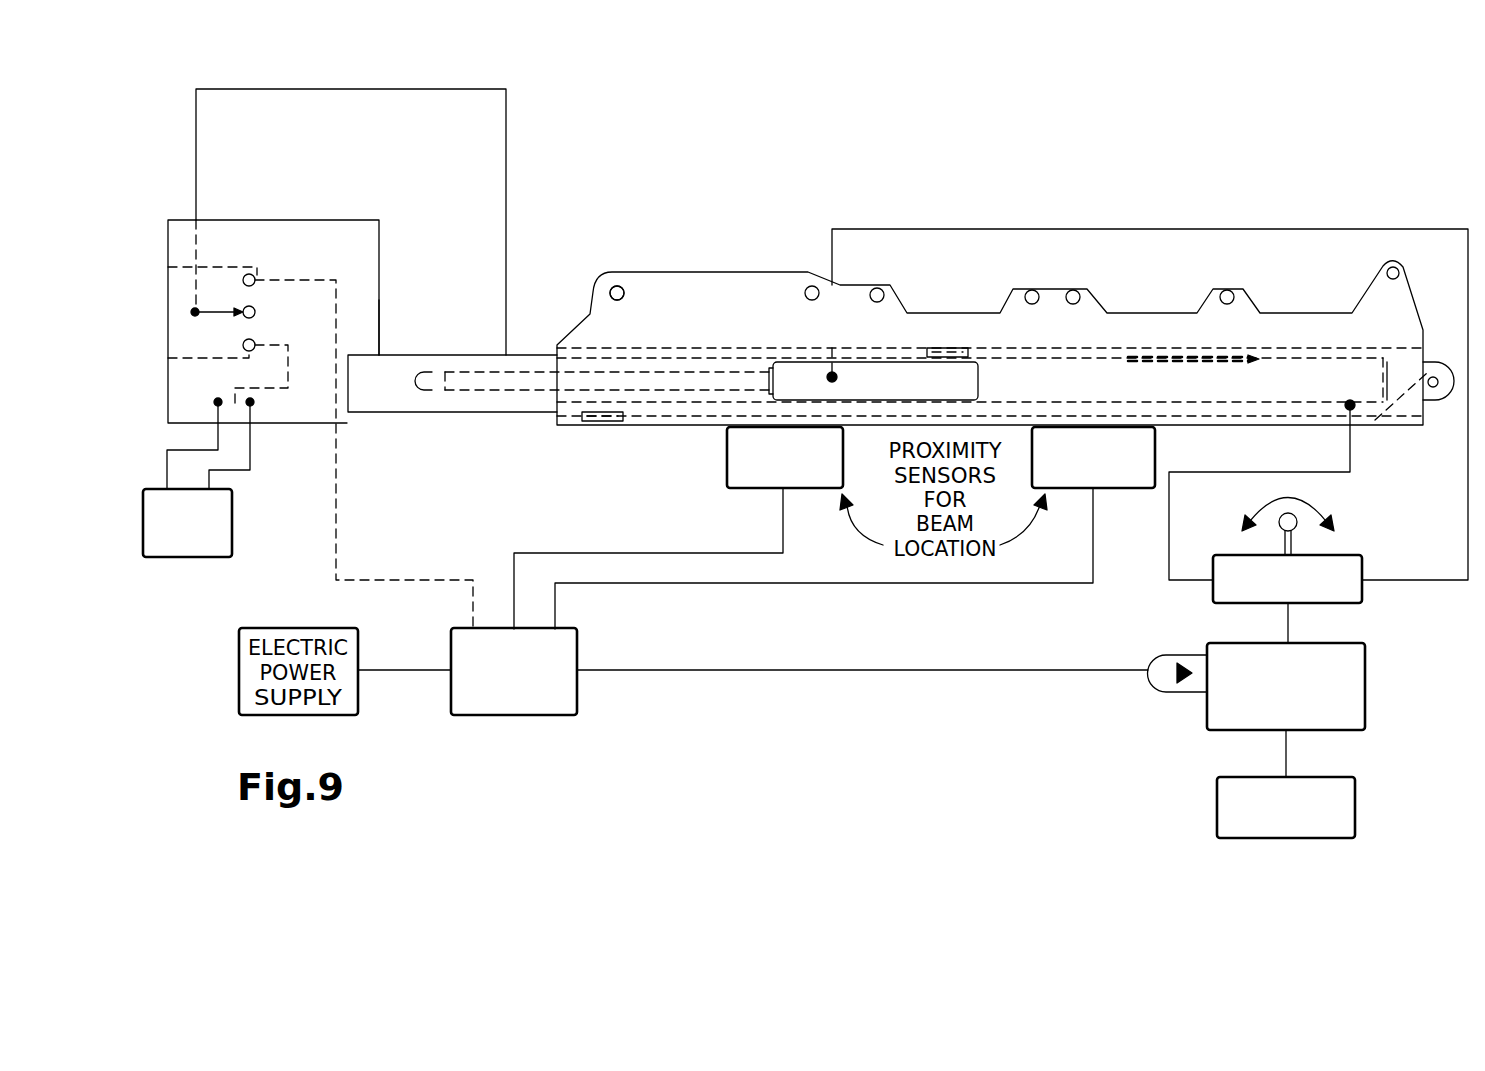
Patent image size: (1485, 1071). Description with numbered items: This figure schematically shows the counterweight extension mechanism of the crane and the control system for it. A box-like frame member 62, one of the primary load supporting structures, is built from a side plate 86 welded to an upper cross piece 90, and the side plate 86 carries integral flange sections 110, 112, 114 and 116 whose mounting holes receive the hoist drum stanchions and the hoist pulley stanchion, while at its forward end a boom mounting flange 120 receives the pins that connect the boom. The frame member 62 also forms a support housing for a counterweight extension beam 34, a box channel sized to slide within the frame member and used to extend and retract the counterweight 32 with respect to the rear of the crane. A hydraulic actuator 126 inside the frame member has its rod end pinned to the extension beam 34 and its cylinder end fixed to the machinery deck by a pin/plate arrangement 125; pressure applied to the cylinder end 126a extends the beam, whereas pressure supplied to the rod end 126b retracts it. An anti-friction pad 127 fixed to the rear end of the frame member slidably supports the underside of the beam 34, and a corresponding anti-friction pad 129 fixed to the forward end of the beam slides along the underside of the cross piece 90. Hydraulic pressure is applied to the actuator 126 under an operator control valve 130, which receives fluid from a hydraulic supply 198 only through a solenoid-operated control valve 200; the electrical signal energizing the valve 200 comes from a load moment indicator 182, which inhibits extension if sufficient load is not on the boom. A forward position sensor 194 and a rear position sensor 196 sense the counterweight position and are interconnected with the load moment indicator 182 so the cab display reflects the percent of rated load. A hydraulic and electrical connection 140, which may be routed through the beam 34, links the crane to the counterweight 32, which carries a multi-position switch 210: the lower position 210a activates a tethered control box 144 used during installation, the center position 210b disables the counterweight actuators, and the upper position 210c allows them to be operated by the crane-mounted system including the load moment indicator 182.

The counterweight 32 is at (365, 281).
The counterweight extension beam 34 is at (452, 352).
The frame member 62 is at (990, 291).
The side plate 86 is at (745, 293).
The cross piece 90 is at (893, 352).
The flange section 110 is at (1227, 290).
The flange section 112 is at (1053, 288).
The flange section 114 is at (877, 287).
The flange section 116 is at (665, 270).
The boom mounting flange 120 is at (1387, 257).
The pin/plate arrangement 125 is at (1440, 404).
The hydraulic actuator 126 is at (1128, 360).
The cylinder end 126a is at (1325, 375).
The rod end 126b is at (798, 372).
The anti-friction pad 127 is at (612, 421).
The anti-friction pad 129 is at (950, 352).
The operator control valve 130 is at (1287, 571).
The hydraulic and electrical connection 140 is at (506, 140).
The control box 144 is at (187, 523).
The load moment indicator 182 is at (577, 683).
The forward position sensor 194 is at (1155, 445).
The rear position sensor 196 is at (743, 480).
The hydraulic supply 198 is at (1345, 817).
The solenoid-operated control valve 200 is at (1360, 698).
The multi-position switch 210 is at (167, 281).
The lower switch position 210a is at (256, 342).
The center switch position 210b is at (256, 311).
The upper switch position 210c is at (253, 271).